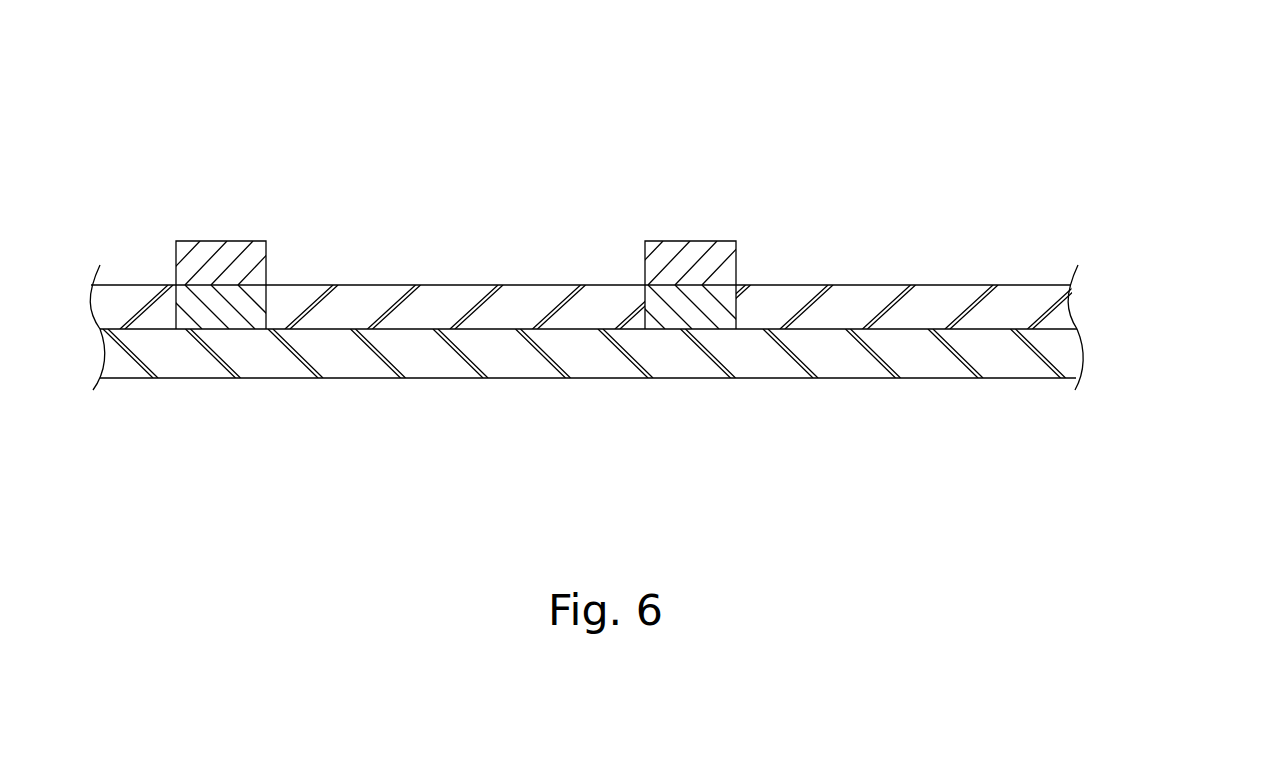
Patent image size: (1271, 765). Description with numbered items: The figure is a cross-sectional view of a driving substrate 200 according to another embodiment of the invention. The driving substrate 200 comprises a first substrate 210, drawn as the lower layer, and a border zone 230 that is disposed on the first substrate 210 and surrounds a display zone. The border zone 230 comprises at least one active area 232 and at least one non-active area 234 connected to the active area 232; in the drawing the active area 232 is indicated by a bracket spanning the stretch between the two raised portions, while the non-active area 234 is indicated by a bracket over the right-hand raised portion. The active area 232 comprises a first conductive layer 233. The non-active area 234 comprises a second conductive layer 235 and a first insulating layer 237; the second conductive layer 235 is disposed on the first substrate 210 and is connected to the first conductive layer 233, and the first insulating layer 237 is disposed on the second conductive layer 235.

The driving substrate 200 is at (1058, 147).
The first substrate 210 is at (1067, 356).
The border zone 230 is at (646, 324).
The active area 232 is at (467, 324).
The first conductive layer 233 is at (425, 315).
The non-active area 234 is at (762, 316).
The second conductive layer 235 is at (693, 315).
The first insulating layer 237 is at (718, 265).